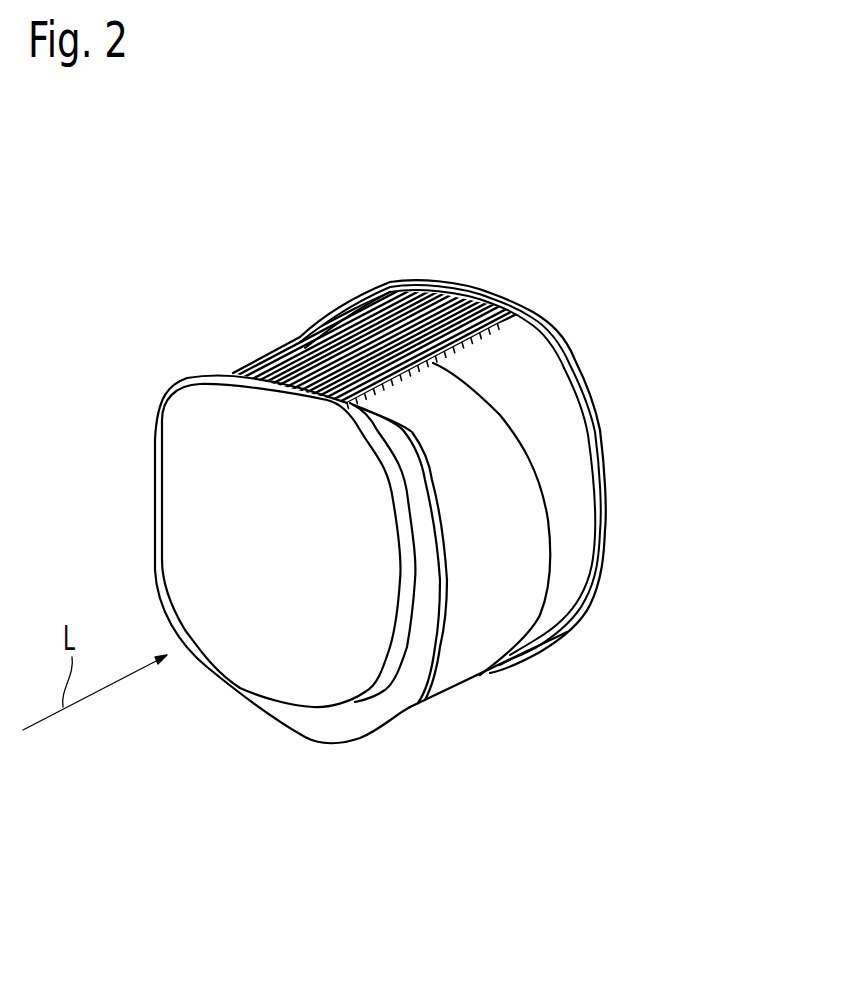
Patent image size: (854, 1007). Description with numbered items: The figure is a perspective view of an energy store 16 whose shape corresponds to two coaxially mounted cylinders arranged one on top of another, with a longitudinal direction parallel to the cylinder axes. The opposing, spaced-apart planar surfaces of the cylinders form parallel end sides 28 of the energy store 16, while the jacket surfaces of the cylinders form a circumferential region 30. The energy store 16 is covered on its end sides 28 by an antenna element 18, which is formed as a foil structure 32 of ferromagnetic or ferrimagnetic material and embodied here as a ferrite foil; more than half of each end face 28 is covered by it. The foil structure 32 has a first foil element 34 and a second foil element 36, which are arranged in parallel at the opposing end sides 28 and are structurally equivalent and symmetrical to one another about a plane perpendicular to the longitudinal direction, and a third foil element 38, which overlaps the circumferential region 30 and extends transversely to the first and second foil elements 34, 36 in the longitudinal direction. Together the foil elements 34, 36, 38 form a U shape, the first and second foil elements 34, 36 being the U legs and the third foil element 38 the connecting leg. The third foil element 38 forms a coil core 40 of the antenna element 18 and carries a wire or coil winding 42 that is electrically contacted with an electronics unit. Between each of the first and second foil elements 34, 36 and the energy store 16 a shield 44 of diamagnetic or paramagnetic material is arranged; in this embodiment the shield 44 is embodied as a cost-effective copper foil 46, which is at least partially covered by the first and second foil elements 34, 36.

The energy store 16 is at (465, 672).
The antenna element 18 is at (449, 423).
The end side 28 is at (224, 515).
The circumferential region 30 is at (500, 582).
The foil structure 32 is at (331, 282).
The first foil element 34 is at (168, 444).
The second foil element 36 is at (545, 323).
The third foil element 38 is at (266, 504).
The coil core 40 is at (233, 373).
The coil winding 42 is at (305, 345).
The shield 44 is at (577, 535).
The copper foil 46 is at (512, 618).